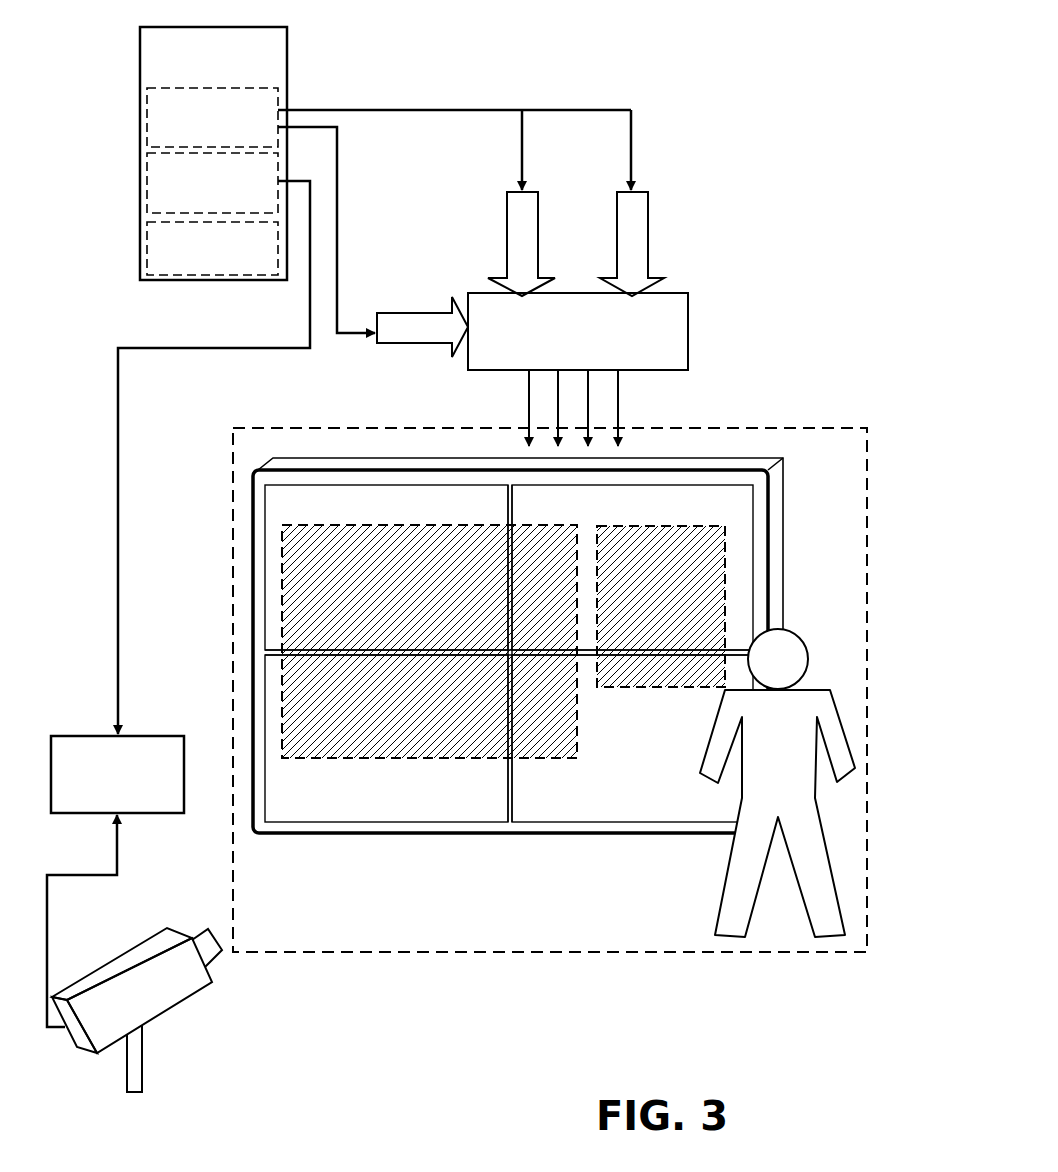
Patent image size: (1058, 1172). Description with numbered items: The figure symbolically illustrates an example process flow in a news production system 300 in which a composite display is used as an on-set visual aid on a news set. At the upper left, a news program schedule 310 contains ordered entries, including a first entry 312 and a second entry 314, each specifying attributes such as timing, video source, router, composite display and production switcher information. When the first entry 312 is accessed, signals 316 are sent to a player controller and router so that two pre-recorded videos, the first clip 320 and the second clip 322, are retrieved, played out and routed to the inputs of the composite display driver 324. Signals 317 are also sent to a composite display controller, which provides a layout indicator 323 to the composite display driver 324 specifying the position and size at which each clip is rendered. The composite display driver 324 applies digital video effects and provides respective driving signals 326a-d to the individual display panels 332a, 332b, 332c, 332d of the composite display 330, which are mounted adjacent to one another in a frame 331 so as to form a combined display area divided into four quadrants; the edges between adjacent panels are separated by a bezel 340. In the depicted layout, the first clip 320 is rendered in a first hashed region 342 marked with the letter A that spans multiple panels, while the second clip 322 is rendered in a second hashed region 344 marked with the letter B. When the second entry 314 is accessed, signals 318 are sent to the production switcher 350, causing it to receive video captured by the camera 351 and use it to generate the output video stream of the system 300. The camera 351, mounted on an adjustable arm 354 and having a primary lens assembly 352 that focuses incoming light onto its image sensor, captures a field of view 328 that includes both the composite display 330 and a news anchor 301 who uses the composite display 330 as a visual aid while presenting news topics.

The news production system 300 is at (746, 100).
The news anchor 301 is at (777, 783).
The news program schedule 310 is at (140, 58).
The first entry 312 is at (147, 118).
The second entry 314 is at (147, 179).
The signals 316 is at (492, 108).
The signals 317 is at (337, 228).
The signals 318 is at (310, 308).
The clip 1 320 is at (650, 218).
The clip 2 322 is at (540, 218).
The layout indicator 323 is at (432, 311).
The composite display driver 324 is at (688, 327).
The driving signals 326a-d is at (512, 398).
The field of view 328 is at (510, 953).
The composite display 330 is at (772, 455).
The frame 331 is at (283, 467).
The display panel 332a is at (265, 497).
The display panel 332b is at (753, 512).
The display panel 332c is at (265, 680).
The display panel 332d is at (557, 823).
The bezel 340 is at (507, 775).
The first hashed region 342 is at (282, 580).
The second hashed region 344 is at (725, 567).
The production switcher 350 is at (184, 784).
The camera 351 is at (130, 952).
The primary lens assembly 352 is at (220, 955).
The adjustable arm 354 is at (143, 1040).